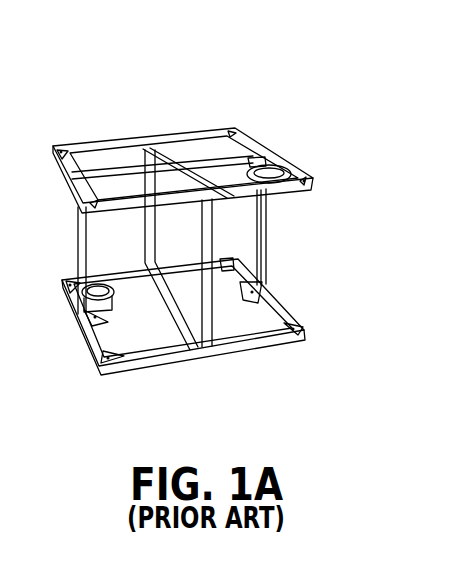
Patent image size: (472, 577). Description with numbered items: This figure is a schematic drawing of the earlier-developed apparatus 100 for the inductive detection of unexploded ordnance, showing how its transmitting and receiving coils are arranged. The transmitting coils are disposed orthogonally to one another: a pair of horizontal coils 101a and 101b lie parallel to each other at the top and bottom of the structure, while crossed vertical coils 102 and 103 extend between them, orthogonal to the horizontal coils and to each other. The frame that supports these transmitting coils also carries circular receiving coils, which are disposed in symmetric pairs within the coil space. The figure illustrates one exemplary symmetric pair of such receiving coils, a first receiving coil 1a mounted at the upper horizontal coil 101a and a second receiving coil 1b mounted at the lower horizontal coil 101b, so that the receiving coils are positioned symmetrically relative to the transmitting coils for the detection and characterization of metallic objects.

The prior art frame assembly 100 is at (171, 99).
The horizontal coil 101a is at (260, 143).
The horizontal coil 101b is at (275, 348).
The receiving coil 1a is at (298, 168).
The receiving coil 1b is at (92, 278).
The vertical coil 102 is at (268, 245).
The vertical coil 103 is at (215, 325).